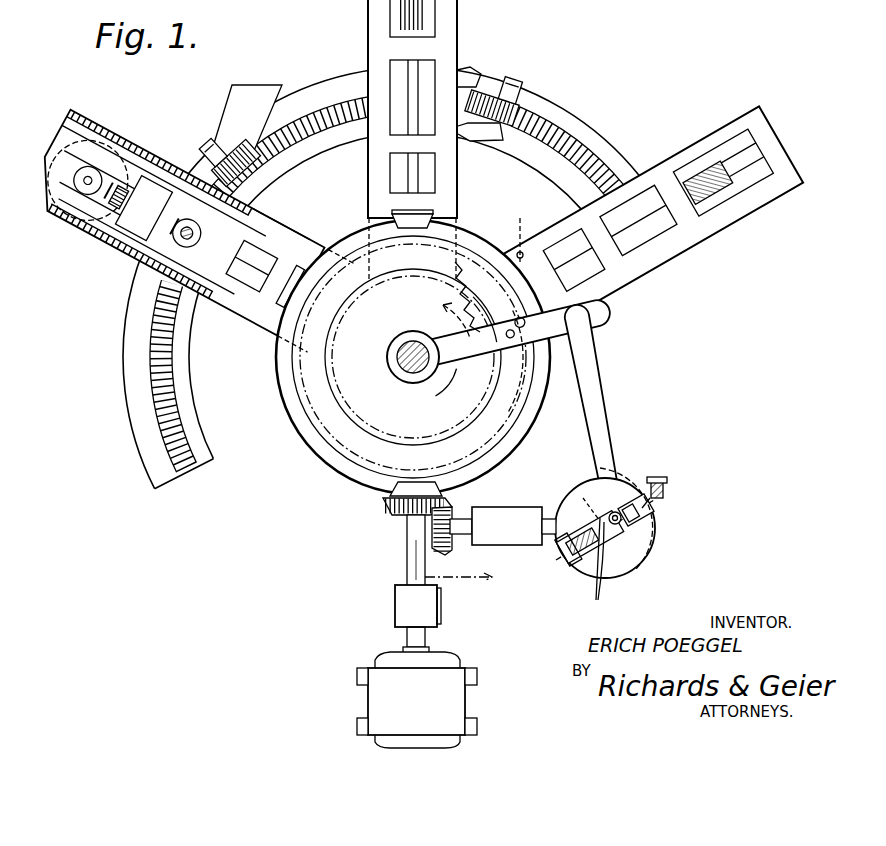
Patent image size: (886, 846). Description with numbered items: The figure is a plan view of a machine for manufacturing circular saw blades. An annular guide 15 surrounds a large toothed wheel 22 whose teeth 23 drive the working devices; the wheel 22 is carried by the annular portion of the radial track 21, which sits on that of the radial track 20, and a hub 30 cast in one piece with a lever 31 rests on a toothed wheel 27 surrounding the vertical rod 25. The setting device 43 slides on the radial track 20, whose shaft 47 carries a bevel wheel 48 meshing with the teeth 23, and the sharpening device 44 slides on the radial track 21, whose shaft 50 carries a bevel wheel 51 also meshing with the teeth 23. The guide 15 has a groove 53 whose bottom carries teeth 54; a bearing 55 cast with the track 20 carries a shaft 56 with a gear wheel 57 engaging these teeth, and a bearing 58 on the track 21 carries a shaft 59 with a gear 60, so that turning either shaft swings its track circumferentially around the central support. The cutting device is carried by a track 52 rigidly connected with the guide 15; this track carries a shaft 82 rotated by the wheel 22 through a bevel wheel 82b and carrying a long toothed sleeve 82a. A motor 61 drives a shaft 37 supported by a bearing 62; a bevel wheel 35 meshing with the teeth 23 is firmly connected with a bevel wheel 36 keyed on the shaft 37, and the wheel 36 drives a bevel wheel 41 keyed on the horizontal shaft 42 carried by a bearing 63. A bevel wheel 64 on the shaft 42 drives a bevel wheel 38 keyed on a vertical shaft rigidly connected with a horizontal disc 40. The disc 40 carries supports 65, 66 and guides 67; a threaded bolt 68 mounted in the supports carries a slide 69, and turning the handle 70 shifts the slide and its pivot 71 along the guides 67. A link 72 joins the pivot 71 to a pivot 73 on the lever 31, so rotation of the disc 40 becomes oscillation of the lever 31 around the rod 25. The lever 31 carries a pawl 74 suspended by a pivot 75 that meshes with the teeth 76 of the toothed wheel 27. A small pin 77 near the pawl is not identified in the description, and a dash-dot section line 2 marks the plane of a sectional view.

The section line 2 is at (459, 588).
The annular guide 15 is at (596, 138).
The radial track 20 is at (447, 182).
The radial track 21 is at (283, 243).
The toothed wheel 22 is at (312, 438).
The teeth 23 is at (322, 462).
The vertical rod 25 is at (411, 372).
The toothed wheel 27 is at (428, 272).
The hub 30 is at (434, 392).
The lever 31 is at (527, 342).
The bevel wheel 35 is at (380, 488).
The bevel wheel 36 is at (386, 508).
The shaft 37 is at (426, 574).
The bevel wheel 38 is at (612, 478).
The horizontal disc 40 is at (598, 526).
The bevel wheel 41 is at (456, 518).
The horizontal shaft 42 is at (658, 133).
The setting device 43 is at (440, 109).
The sharpening device 44 is at (185, 225).
The shaft 47 is at (418, 170).
The bevel wheel 48 is at (445, 222).
The shaft 50 is at (243, 283).
The bevel wheel 51 is at (312, 268).
The track 52 is at (655, 211).
The groove 53 is at (185, 380).
The teeth 54 is at (305, 128).
The bearing 55 is at (515, 100).
The shaft 56 is at (512, 78).
The gear wheel 57 is at (540, 116).
The bearing 58 is at (262, 140).
The shaft 59 is at (222, 124).
The gear 60 is at (310, 110).
The motor 61 is at (458, 690).
The bearing 62 is at (436, 608).
The bearing 63 is at (520, 514).
The bevel wheel 64 is at (575, 505).
The support 65 is at (640, 494).
The support 66 is at (578, 572).
The guides 67 is at (608, 569).
The threaded bolt 68 is at (664, 505).
The slide 69 is at (618, 562).
The handle 70 is at (663, 492).
The pivot 71 is at (648, 556).
The link 72 is at (604, 392).
The pivot 73 is at (596, 322).
The pawl 74 is at (490, 302).
The pivot 75 is at (510, 352).
The teeth 76 is at (467, 292).
The pin 77 is at (532, 328).
The shaft 82 is at (732, 174).
The toothed sleeve 82a is at (705, 196).
The bevel wheel 82b is at (530, 226).